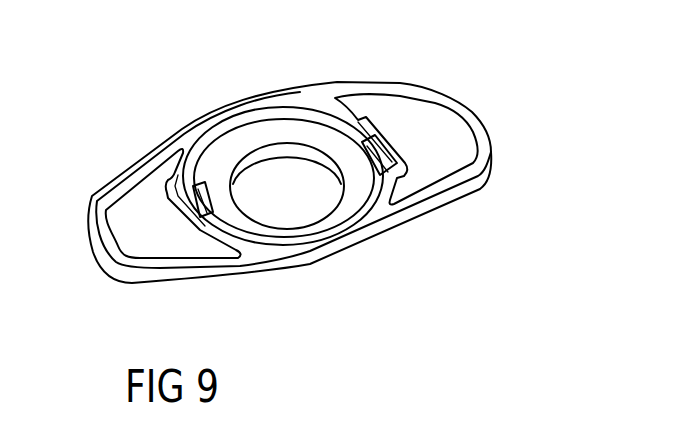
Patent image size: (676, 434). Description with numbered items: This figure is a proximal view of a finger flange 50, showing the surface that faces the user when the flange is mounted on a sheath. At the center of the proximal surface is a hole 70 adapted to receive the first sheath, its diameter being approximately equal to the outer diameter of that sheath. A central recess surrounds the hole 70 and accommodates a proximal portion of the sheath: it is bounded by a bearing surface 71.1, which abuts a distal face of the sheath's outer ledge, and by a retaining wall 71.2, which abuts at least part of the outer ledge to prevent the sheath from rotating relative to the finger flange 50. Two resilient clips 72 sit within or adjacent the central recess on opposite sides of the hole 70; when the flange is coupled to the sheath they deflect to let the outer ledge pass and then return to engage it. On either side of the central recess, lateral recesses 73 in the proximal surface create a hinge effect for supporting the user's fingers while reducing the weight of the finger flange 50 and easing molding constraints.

The finger flange 50 is at (117, 170).
The hole 70 is at (312, 207).
The bearing surface 71.1 is at (218, 152).
The retaining wall 71.2 is at (282, 108).
The resilient clips 72 is at (398, 200).
The lateral recesses 73 is at (133, 233).